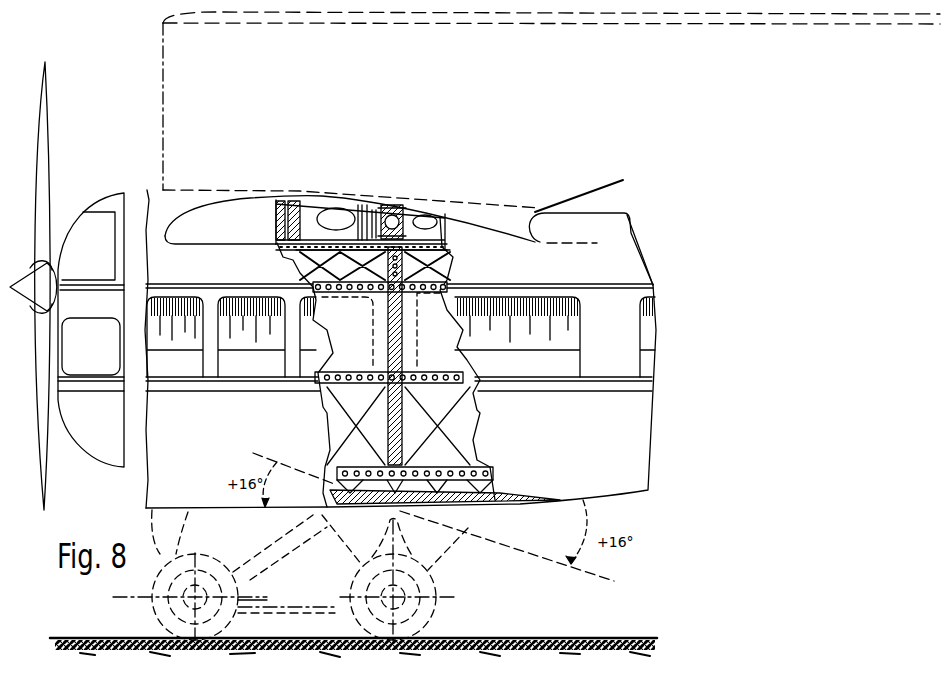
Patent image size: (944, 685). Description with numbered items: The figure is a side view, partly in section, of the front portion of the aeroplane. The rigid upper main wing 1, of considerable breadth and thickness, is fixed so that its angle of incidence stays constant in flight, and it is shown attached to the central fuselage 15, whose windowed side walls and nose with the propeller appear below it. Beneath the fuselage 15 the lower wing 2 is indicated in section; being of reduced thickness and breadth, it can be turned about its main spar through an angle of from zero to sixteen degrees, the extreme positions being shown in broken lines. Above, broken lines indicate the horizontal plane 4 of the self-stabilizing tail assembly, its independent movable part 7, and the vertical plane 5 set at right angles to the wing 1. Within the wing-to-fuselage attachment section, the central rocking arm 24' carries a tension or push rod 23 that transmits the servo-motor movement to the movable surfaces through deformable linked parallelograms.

The upper main wing 1 is at (230, 213).
The lower wing 2 is at (492, 500).
The horizontal plane 4 is at (545, 20).
The vertical plane 5 is at (173, 93).
The independent part of horizontal plane 7 is at (286, 18).
The fuselage 15 is at (618, 472).
The tension or push rod 23 is at (383, 328).
The central rocking arm 24' is at (415, 203).